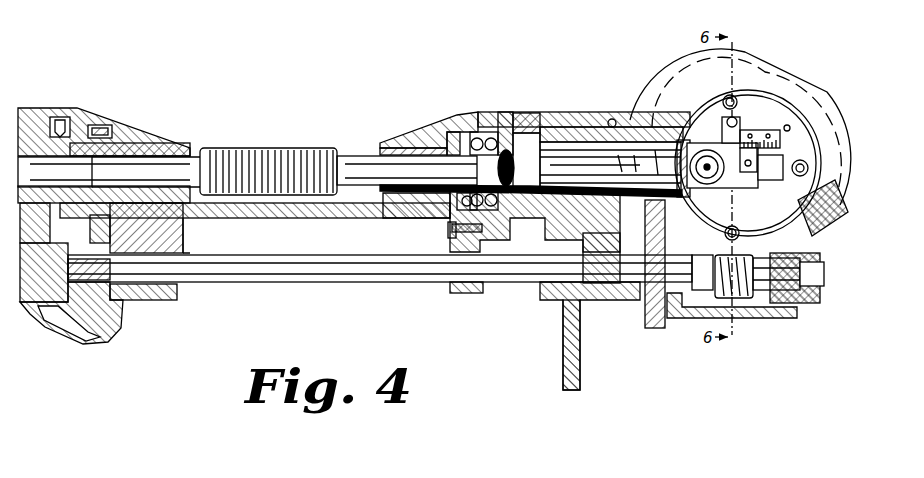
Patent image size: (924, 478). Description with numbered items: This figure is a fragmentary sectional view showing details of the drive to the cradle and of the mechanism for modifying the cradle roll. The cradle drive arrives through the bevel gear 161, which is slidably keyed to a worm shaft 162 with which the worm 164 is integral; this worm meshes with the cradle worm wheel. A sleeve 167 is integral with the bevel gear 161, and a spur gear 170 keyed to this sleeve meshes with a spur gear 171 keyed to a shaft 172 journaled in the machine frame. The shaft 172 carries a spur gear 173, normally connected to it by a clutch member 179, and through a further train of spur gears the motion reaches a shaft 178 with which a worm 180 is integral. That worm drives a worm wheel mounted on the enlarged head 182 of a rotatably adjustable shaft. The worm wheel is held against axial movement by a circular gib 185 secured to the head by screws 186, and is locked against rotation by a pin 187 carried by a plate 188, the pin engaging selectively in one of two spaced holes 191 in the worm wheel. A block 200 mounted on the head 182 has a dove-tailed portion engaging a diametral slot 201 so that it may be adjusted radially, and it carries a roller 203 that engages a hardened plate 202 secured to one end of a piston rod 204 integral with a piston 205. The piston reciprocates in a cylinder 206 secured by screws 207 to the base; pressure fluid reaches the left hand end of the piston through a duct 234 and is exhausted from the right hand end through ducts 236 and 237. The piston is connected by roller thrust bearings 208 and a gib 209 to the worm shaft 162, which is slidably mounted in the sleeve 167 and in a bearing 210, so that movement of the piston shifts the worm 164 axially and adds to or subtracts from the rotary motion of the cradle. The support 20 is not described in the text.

The bevel gear 161 is at (68, 118).
The spur gear 170 is at (103, 126).
The sleeve 167 is at (135, 141).
The worm 164 is at (276, 150).
The worm shaft 162 is at (372, 165).
The bearing 210 is at (398, 140).
The gib 209 is at (455, 140).
The roller thrust bearings 208 is at (480, 135).
The piston 205 is at (505, 128).
The cylinder 206 is at (524, 112).
The piston rod 204 is at (583, 150).
The duct 236 is at (595, 127).
The duct 237 is at (616, 120).
The hardened plate 202 is at (723, 118).
The pin 187 is at (735, 119).
The plate 188 is at (750, 147).
The diametral slot 201 is at (786, 158).
The screws 186 is at (806, 165).
The circular gib 185 is at (800, 185).
The enlarged head 182 is at (830, 202).
The roller 203 is at (710, 185).
The block 200 is at (745, 188).
The holes 191 is at (740, 231).
The duct 234 is at (450, 226).
The screws 207 is at (448, 234).
The shaft 172 is at (312, 288).
The spur gear 171 is at (84, 334).
The spur gear 173 is at (655, 329).
The clutch member 179 is at (680, 320).
The worm 180 is at (740, 300).
The shaft 178 is at (763, 302).
The support 20 is at (562, 353).